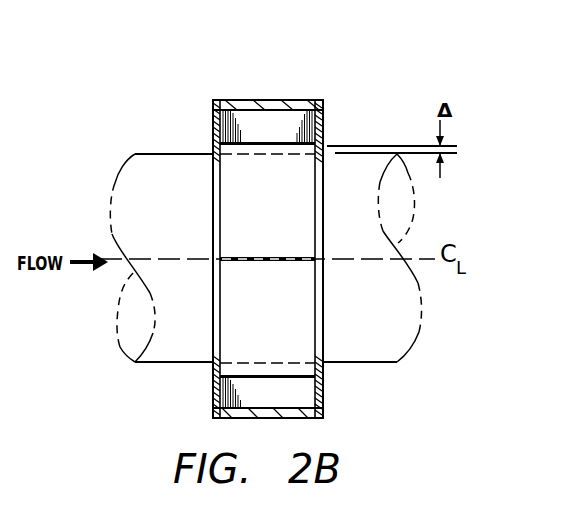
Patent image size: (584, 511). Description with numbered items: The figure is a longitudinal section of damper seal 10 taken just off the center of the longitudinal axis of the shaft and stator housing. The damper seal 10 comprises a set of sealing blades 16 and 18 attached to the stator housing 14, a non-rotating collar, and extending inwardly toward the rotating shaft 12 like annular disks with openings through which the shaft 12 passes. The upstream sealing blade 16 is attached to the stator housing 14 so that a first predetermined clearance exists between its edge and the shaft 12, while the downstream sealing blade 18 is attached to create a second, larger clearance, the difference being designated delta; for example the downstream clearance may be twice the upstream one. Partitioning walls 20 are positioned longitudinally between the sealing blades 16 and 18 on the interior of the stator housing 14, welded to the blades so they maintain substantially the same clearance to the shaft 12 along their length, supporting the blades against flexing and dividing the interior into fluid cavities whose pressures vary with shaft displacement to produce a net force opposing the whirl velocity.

The damper seal 10 is at (231, 85).
The shaft 12 is at (157, 154).
The stator housing 14 is at (290, 100).
The upstream sealing blade 16 is at (213, 126).
The downstream sealing blade 18 is at (323, 126).
The partitioning walls 20 is at (275, 137).